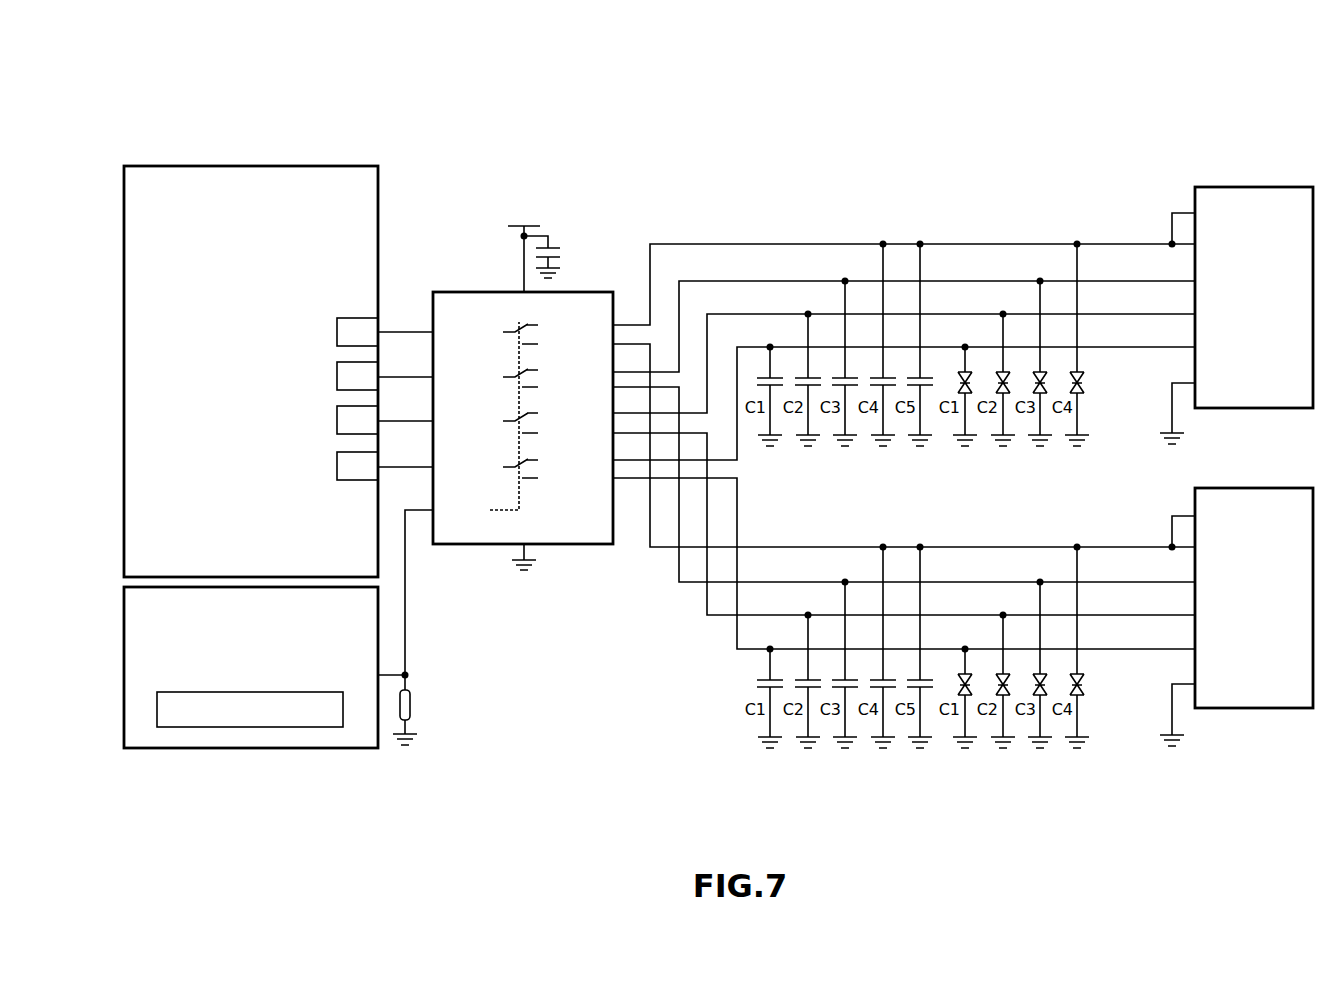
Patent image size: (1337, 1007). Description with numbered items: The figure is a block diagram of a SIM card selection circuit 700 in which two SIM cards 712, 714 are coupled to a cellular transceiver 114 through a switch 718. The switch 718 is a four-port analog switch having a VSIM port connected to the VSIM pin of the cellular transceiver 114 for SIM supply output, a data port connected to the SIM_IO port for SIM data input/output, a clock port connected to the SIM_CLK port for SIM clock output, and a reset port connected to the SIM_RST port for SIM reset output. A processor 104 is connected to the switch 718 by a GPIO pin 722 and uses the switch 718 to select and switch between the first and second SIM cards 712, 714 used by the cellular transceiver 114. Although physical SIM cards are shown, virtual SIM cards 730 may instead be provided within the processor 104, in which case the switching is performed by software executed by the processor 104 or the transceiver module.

The SIM card selection circuit 700 is at (216, 36).
The cellular transceiver 114 is at (322, 166).
The processor 104 is at (310, 750).
The switch 718 is at (570, 546).
The SIM card 712 is at (1193, 192).
The SIM card 714 is at (1245, 709).
The GPIO pin 722 is at (388, 678).
The virtual SIM cards 730 is at (250, 709).